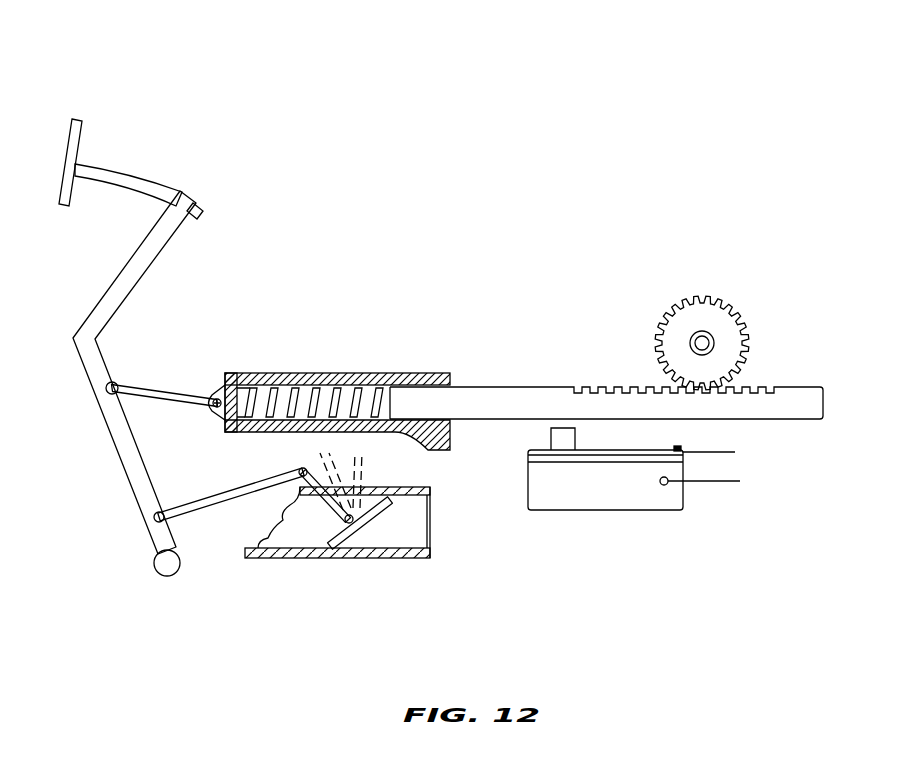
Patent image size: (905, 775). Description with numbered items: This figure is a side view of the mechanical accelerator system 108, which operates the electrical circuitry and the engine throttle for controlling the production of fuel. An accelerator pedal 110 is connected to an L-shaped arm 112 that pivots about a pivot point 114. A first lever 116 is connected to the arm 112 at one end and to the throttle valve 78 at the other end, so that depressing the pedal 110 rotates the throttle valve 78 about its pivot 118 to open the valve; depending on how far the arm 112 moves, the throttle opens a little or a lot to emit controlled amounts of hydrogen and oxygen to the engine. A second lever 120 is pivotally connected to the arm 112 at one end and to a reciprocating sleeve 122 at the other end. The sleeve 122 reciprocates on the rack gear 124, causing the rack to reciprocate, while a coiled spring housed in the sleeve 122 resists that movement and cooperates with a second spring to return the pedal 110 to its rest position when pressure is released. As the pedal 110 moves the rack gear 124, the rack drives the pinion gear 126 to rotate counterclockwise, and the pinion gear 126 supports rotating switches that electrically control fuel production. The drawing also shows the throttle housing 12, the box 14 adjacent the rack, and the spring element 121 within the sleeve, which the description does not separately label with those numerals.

The housing 12 is at (412, 560).
The motor box 14 is at (628, 497).
The throttle valve 78 is at (345, 522).
The mechanical accelerator system 108 is at (262, 334).
The accelerator pedal 110 is at (78, 147).
The L-shaped arm 112 is at (99, 302).
The pivot point 114 is at (160, 567).
The first lever 116 is at (205, 502).
The pivot 118 is at (352, 522).
The second lever 120 is at (153, 390).
The spring 121 is at (335, 395).
The reciprocating sleeve 122 is at (293, 377).
The rack gear 124 is at (500, 397).
The pinion gear 126 is at (737, 333).